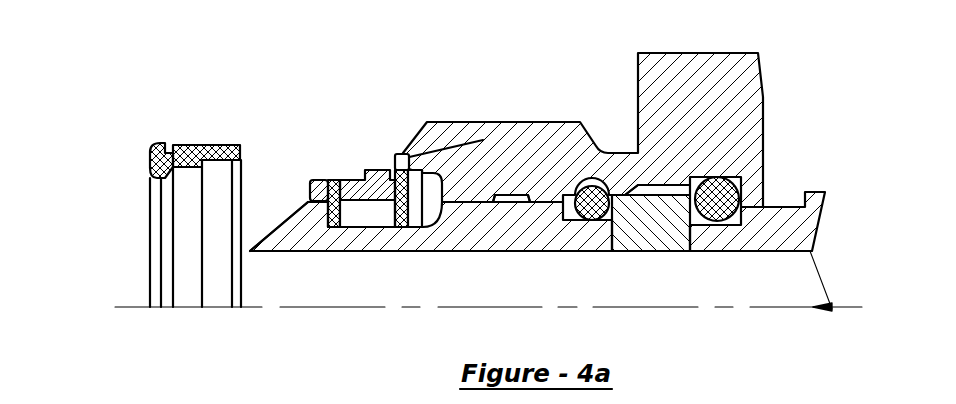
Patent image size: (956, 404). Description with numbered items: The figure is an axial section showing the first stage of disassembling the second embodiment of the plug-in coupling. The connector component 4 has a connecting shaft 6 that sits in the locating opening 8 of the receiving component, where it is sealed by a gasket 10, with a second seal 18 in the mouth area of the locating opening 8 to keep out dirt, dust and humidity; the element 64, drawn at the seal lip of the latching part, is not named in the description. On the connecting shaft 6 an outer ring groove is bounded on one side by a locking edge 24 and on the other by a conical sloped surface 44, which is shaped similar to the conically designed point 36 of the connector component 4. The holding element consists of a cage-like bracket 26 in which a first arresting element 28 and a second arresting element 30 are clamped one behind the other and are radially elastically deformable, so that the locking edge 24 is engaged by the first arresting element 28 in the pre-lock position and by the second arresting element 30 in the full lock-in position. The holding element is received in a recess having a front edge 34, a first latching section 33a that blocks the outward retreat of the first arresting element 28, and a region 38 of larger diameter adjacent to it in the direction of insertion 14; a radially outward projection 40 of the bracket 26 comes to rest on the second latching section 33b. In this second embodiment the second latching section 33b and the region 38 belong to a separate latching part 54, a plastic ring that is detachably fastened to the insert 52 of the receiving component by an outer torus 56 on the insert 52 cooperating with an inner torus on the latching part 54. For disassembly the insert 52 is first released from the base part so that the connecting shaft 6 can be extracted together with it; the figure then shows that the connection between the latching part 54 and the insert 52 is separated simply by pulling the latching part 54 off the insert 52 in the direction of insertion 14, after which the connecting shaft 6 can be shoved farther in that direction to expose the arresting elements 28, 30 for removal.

The connector component 4 is at (800, 170).
The connecting shaft 6 is at (818, 220).
The locating opening 8 is at (686, 230).
The gasket 10 is at (590, 222).
The direction of insertion 14 is at (833, 312).
The second seal 18 is at (743, 226).
The locking edge 24 is at (310, 199).
The bracket 26 is at (363, 216).
The first arresting element 28 is at (401, 227).
The second arresting element 30 is at (333, 220).
The first latching section 33a is at (483, 140).
The second latching section 33b is at (168, 298).
The front edge 34 is at (417, 228).
The conically designed point 36 is at (288, 227).
The region of larger diameter 38 is at (220, 298).
The projection 40 is at (380, 168).
The conical sloped surface 44 is at (437, 205).
The insert 52 is at (755, 66).
The latching part 54 is at (218, 115).
The outer torus 56 is at (398, 154).
The seal lip 64 is at (184, 178).